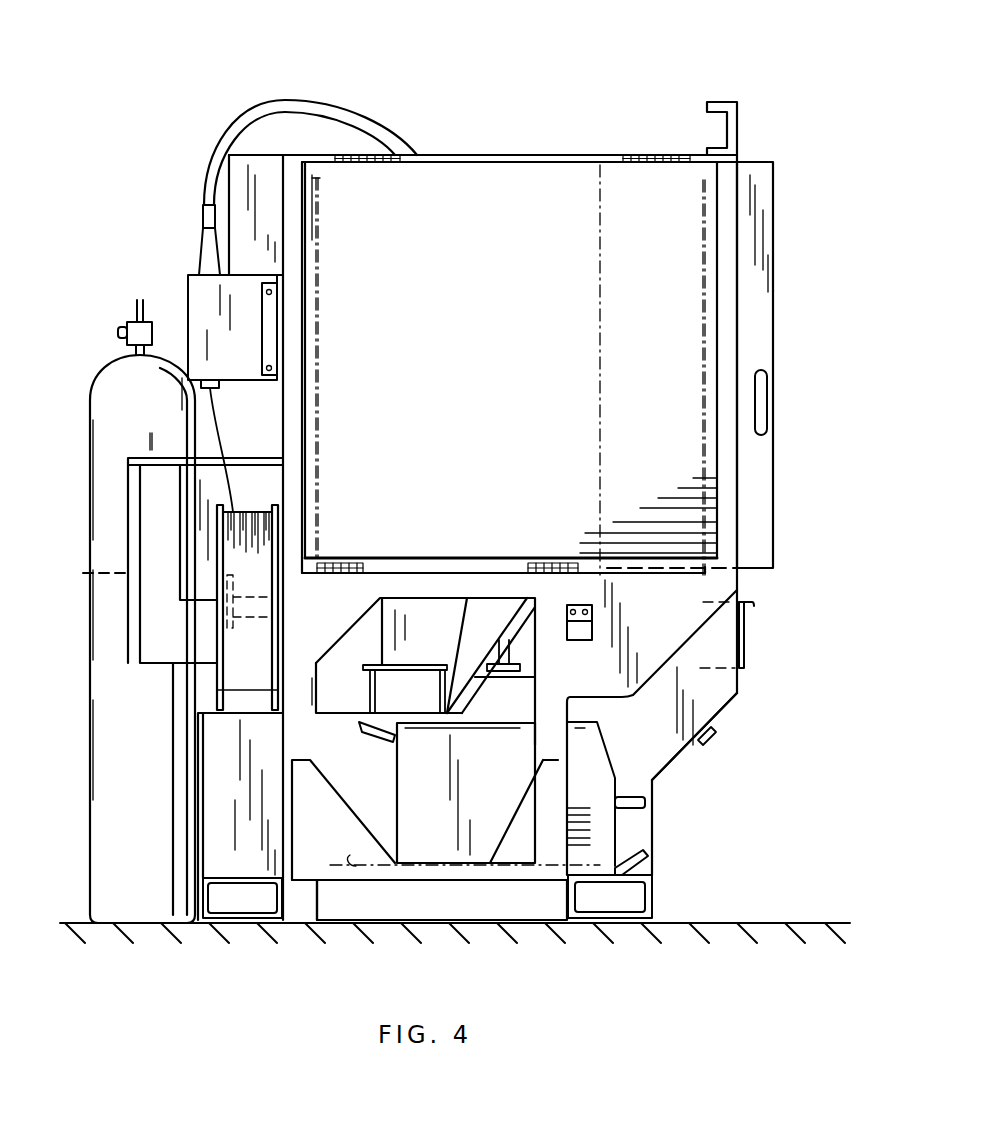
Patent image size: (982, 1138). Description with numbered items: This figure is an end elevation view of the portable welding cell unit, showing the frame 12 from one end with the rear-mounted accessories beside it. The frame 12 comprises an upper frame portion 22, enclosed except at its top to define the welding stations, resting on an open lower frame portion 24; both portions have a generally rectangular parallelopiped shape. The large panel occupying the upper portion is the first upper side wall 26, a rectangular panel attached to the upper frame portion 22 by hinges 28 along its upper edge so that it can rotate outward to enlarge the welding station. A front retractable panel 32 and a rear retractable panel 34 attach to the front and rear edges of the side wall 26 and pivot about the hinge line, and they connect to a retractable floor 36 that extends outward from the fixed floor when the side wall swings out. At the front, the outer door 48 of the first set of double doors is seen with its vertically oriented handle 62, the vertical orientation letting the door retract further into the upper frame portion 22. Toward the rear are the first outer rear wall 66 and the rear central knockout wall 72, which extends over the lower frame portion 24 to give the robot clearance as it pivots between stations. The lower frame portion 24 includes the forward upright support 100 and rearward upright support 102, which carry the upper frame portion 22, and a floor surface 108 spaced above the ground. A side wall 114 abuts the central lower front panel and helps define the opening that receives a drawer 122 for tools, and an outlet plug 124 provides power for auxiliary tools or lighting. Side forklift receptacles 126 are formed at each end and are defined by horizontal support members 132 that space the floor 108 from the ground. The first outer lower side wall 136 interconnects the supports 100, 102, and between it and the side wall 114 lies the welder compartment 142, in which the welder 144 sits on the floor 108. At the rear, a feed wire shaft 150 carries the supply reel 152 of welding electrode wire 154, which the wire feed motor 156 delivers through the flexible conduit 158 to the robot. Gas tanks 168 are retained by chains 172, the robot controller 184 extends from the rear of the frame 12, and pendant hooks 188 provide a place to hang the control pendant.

The frame 12 is at (740, 172).
The upper frame portion 22 is at (785, 215).
The lower frame portion 24 is at (752, 712).
The first upper side wall 26 is at (470, 195).
The hinges 28 is at (367, 155).
The front retractable panel 32 is at (705, 338).
The rear retractable panel 34 is at (318, 363).
The retractable floor 36 is at (429, 570).
The outer door 48 is at (757, 503).
The handles 62 is at (762, 411).
The first outer rear wall 66 is at (280, 203).
The rear central knockout wall 72 is at (229, 185).
The upright support 100 is at (546, 738).
The upright support 102 is at (303, 738).
The floor surface 108 is at (650, 868).
The side wall 114 is at (658, 745).
The drawer 122 is at (745, 645).
The outlet plug 124 is at (713, 732).
The side forklift receptacles 126 is at (250, 905).
The horizontal support members 132 is at (655, 891).
The first outer lower side wall 136 is at (513, 847).
The welder compartment 142 is at (372, 815).
The welder 144 is at (603, 777).
The feed wire shaft 150 is at (280, 606).
The supply reel 152 is at (215, 683).
The welding electrode wire 154 is at (228, 492).
The wire feed motor 156 is at (188, 285).
The flexible tube or conduit 158 is at (250, 102).
The tanks 168 is at (105, 405).
The chains 172 is at (118, 568).
The controller 184 is at (130, 622).
The pendant hooks 188 is at (578, 640).